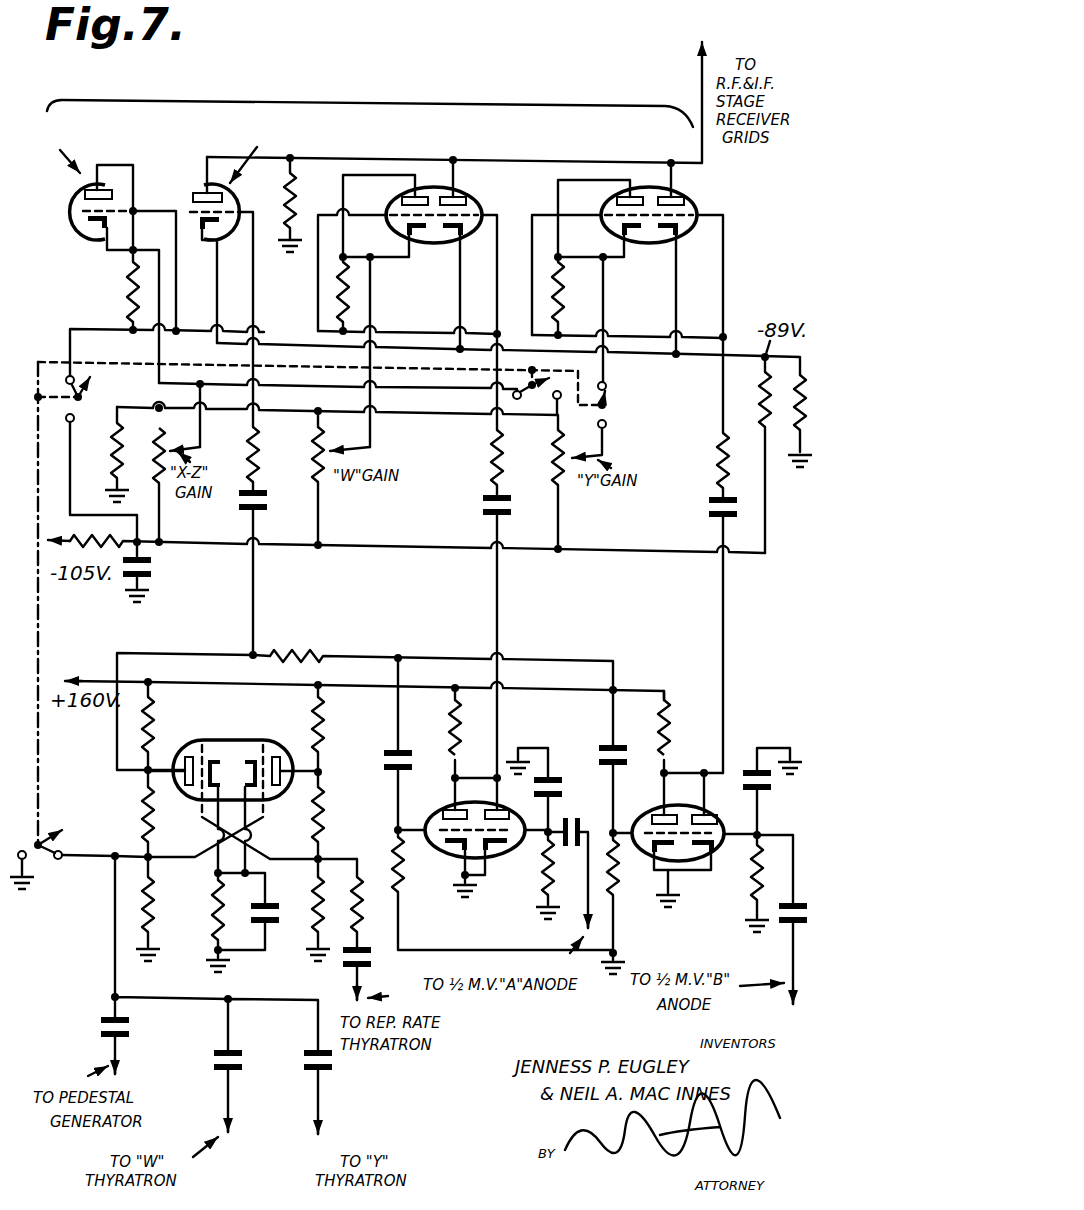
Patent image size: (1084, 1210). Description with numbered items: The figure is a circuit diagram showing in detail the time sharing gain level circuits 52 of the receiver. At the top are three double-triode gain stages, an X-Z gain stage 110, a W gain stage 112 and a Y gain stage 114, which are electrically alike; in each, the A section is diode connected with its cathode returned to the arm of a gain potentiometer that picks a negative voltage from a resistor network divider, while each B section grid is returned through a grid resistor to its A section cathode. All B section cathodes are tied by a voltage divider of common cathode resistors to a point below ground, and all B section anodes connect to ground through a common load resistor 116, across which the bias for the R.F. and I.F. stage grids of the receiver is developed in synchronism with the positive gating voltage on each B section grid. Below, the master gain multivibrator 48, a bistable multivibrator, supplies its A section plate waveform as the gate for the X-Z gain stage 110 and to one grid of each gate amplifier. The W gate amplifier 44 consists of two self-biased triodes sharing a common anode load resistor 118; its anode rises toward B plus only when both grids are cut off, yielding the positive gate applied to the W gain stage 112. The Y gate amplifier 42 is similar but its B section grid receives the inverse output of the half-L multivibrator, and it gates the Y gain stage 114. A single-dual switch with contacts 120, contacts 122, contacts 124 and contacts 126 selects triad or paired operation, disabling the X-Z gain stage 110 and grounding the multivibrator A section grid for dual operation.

The time sharing gain level circuits 52 is at (370, 91).
The X-Z gain stage 110 is at (228, 131).
The W gain stage 112 is at (493, 137).
The Y gain stage 114 is at (617, 156).
The common load resistor 116 is at (318, 191).
The common anode load resistor 118 is at (452, 731).
The contacts 120 is at (104, 396).
The contacts 122 is at (545, 398).
The contacts 124 is at (607, 403).
The contacts 126 is at (66, 839).
The master gain multivibrator 48 is at (257, 733).
The W gate amplifier 44 is at (514, 949).
The Y gate amplifier 42 is at (721, 956).